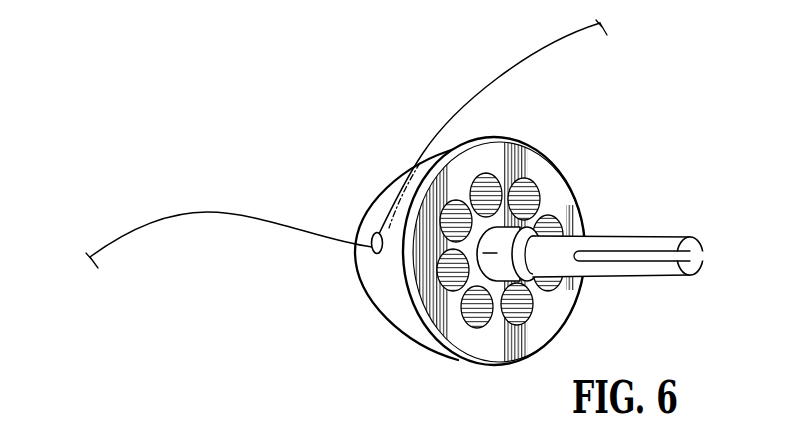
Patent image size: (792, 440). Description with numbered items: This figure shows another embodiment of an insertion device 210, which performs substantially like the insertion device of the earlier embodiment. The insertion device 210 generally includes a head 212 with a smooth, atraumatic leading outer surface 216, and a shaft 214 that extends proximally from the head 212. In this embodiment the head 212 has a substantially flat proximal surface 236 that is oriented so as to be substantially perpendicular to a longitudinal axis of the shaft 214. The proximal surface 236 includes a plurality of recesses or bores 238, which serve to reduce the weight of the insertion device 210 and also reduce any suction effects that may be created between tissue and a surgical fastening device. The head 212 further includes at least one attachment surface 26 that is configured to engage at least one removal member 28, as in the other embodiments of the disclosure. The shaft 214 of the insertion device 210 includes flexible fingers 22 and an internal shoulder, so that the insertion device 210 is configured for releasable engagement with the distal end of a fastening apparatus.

The flexible fingers 22 is at (655, 238).
The attachment surface 26 is at (376, 236).
The removal member 28 is at (180, 212).
The insertion device 210 is at (352, 92).
The head 212 is at (315, 270).
The shaft 214 is at (636, 209).
The leading outer surface 216 is at (387, 286).
The proximal surface 236 is at (557, 202).
The bores 238 is at (524, 196).